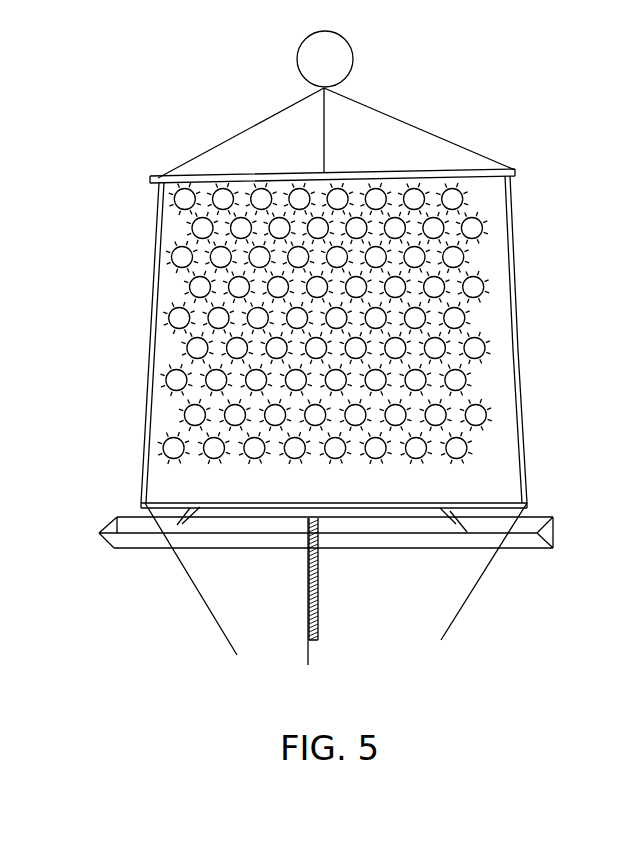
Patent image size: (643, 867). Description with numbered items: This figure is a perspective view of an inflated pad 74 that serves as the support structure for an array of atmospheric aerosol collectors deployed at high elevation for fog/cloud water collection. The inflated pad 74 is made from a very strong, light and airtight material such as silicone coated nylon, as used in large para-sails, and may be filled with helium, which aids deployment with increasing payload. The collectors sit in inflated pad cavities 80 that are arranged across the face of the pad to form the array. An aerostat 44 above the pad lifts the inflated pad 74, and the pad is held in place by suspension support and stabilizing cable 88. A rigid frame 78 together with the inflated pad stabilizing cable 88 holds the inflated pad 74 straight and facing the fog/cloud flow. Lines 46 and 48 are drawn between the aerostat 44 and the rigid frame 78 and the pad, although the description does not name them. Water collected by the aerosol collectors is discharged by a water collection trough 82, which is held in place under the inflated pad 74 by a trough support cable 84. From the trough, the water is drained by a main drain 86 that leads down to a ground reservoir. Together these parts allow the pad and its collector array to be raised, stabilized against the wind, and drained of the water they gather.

The aerostat 44 is at (357, 60).
The support rod 46 is at (330, 143).
The suspension cables 48 is at (233, 136).
The inflated pad 74 is at (160, 247).
The rigid frame 78 is at (458, 170).
The inflated pad cavities 80 is at (178, 285).
The water collection trough 82 is at (133, 545).
The trough support cable 84 is at (187, 526).
The main drain 86 is at (318, 620).
The inflated pad stabilizing cable 88 is at (203, 605).